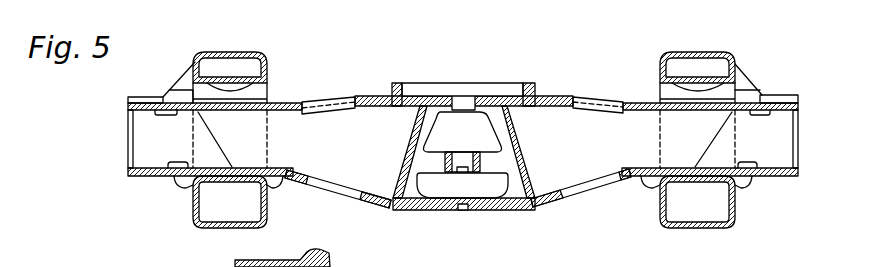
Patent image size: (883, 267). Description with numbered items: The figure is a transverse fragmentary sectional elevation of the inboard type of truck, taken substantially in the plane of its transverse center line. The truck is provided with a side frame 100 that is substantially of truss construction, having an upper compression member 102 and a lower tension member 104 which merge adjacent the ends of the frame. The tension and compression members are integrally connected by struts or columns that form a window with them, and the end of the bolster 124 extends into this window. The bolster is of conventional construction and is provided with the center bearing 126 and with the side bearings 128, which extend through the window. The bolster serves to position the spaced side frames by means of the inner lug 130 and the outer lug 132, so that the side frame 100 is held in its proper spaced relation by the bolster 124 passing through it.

The side frame 100 is at (268, 70).
The upper compression member 102 is at (233, 53).
The lower tension member 104 is at (217, 228).
The bolster 124 is at (575, 175).
The center bearing 126 is at (430, 90).
The side bearings 128 is at (148, 97).
The inner lug 130 is at (273, 188).
The outer lug 132 is at (182, 181).